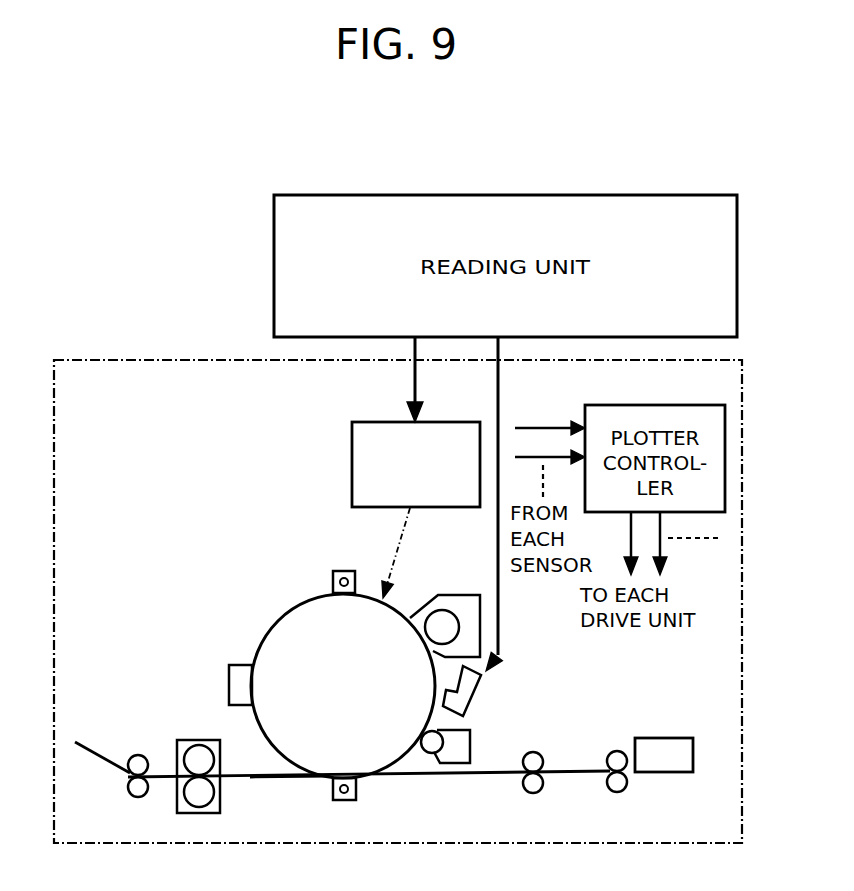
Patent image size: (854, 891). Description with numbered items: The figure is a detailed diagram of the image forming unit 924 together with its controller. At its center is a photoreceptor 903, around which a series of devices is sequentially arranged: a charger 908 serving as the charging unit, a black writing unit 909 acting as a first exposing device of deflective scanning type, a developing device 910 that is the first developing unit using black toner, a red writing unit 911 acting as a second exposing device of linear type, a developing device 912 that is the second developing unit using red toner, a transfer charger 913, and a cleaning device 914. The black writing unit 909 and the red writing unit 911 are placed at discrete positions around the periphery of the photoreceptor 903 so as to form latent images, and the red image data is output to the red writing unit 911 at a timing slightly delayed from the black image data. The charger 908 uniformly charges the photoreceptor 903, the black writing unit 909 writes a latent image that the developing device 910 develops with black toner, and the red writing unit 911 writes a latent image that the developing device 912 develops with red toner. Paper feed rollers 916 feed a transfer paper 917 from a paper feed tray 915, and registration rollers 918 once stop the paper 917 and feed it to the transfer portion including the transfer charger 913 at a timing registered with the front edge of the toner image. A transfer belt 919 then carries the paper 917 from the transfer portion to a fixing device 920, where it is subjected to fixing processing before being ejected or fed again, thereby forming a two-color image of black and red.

The photoreceptor 903 is at (288, 604).
The charger 908 is at (338, 571).
The black writing unit 909 is at (455, 422).
The developing device 910 is at (462, 595).
The red writing unit 911 is at (478, 705).
The developing device 912 is at (472, 738).
The transfer charger 913 is at (357, 790).
The cleaning device 914 is at (238, 665).
The paper feed tray 915 is at (680, 738).
The paper feed rollers 916 is at (628, 786).
The transfer paper 917 is at (570, 775).
The registration rollers 918 is at (522, 789).
The transfer belt 919 is at (285, 777).
The fixing device 920 is at (186, 740).
The image forming unit 924 is at (97, 360).